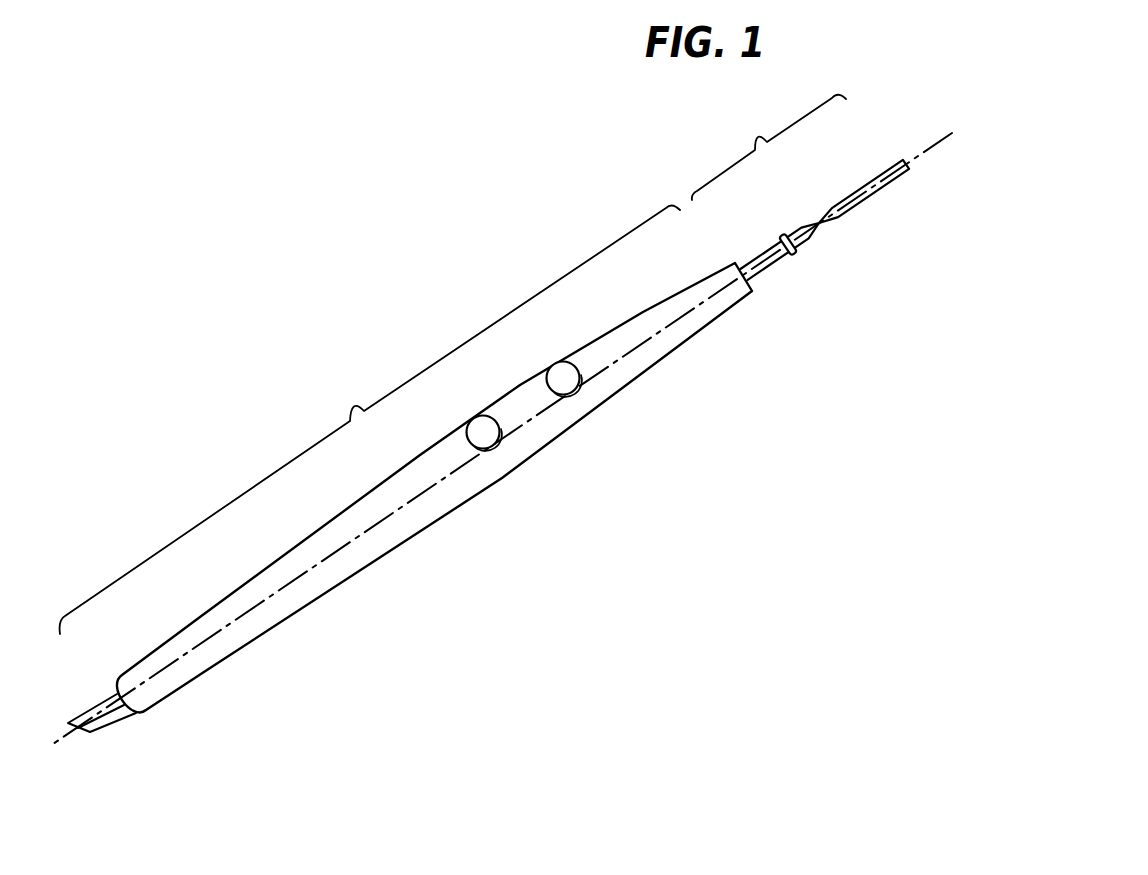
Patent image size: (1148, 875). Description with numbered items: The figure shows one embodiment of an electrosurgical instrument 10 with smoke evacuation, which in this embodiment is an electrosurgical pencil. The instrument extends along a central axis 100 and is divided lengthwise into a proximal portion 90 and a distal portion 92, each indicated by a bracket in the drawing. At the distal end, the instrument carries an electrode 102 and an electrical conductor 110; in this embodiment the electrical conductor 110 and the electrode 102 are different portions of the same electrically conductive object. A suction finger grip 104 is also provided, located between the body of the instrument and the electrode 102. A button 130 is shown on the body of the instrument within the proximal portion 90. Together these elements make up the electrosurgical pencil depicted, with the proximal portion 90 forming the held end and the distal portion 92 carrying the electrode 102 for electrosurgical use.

The electrosurgical instrument 10 is at (480, 196).
The proximal portion 90 is at (370, 419).
The distal portion 92 is at (769, 147).
The central axis 100 is at (258, 620).
The electrode 102 is at (872, 212).
The suction finger grip 104 is at (756, 247).
The electrical conductor 110 is at (812, 213).
The button 130 is at (504, 451).